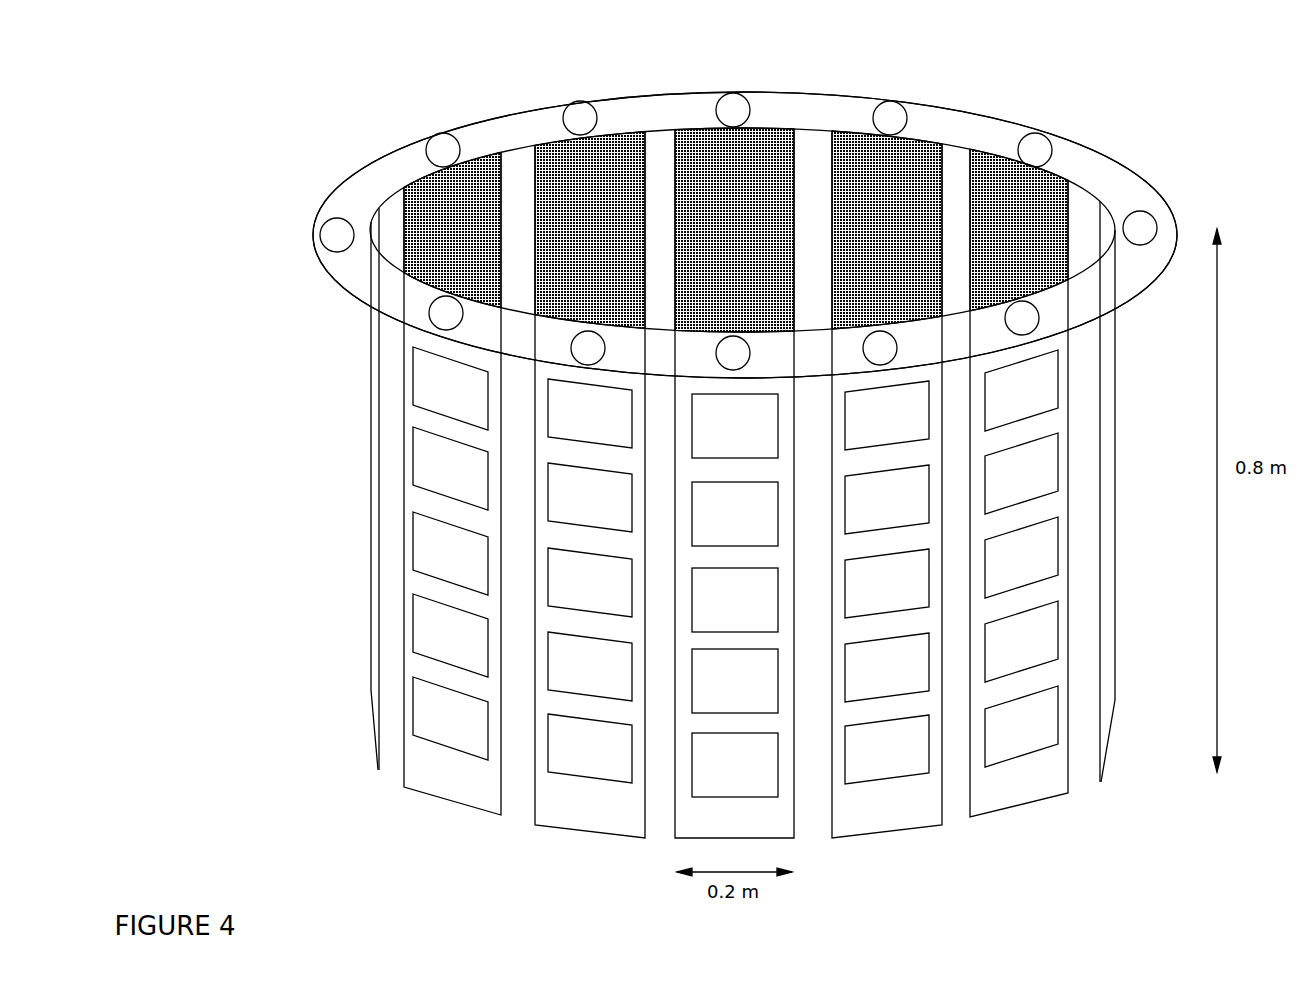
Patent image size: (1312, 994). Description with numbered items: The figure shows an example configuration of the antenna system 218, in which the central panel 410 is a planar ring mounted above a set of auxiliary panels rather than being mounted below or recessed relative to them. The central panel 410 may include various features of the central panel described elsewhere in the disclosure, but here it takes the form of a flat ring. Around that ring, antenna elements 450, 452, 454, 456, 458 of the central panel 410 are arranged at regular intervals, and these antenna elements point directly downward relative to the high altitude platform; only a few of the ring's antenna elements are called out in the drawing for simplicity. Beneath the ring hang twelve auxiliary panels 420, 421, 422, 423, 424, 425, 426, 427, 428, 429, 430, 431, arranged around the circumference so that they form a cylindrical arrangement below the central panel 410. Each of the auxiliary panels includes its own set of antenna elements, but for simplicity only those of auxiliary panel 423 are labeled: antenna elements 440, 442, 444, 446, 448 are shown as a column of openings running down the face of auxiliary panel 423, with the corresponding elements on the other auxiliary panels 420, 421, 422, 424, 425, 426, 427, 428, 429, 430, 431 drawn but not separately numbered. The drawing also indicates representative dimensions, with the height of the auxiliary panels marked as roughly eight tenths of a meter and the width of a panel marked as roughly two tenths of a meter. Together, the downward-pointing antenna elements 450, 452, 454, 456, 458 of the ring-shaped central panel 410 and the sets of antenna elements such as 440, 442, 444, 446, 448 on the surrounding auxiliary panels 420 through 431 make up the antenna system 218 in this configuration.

The antenna system 218 is at (1060, 108).
The central panel 410 is at (1135, 174).
The antenna element 450 is at (1158, 228).
The antenna element 452 is at (1040, 325).
The antenna element 454 is at (428, 310).
The antenna element 456 is at (318, 231).
The antenna element 458 is at (427, 138).
The auxiliary panel 420 is at (1110, 737).
The auxiliary panel 421 is at (1023, 807).
The auxiliary panel 422 is at (882, 838).
The auxiliary panel 423 is at (795, 838).
The auxiliary panel 424 is at (580, 833).
The auxiliary panel 425 is at (448, 798).
The auxiliary panel 426 is at (372, 707).
The auxiliary panel 427 is at (438, 243).
The auxiliary panel 428 is at (573, 205).
The auxiliary panel 429 is at (716, 190).
The auxiliary panel 430 is at (873, 205).
The auxiliary panel 431 is at (996, 223).
The antenna element 440 is at (718, 437).
The antenna element 442 is at (718, 523).
The antenna element 444 is at (718, 607).
The antenna element 446 is at (718, 691).
The antenna element 448 is at (718, 775).